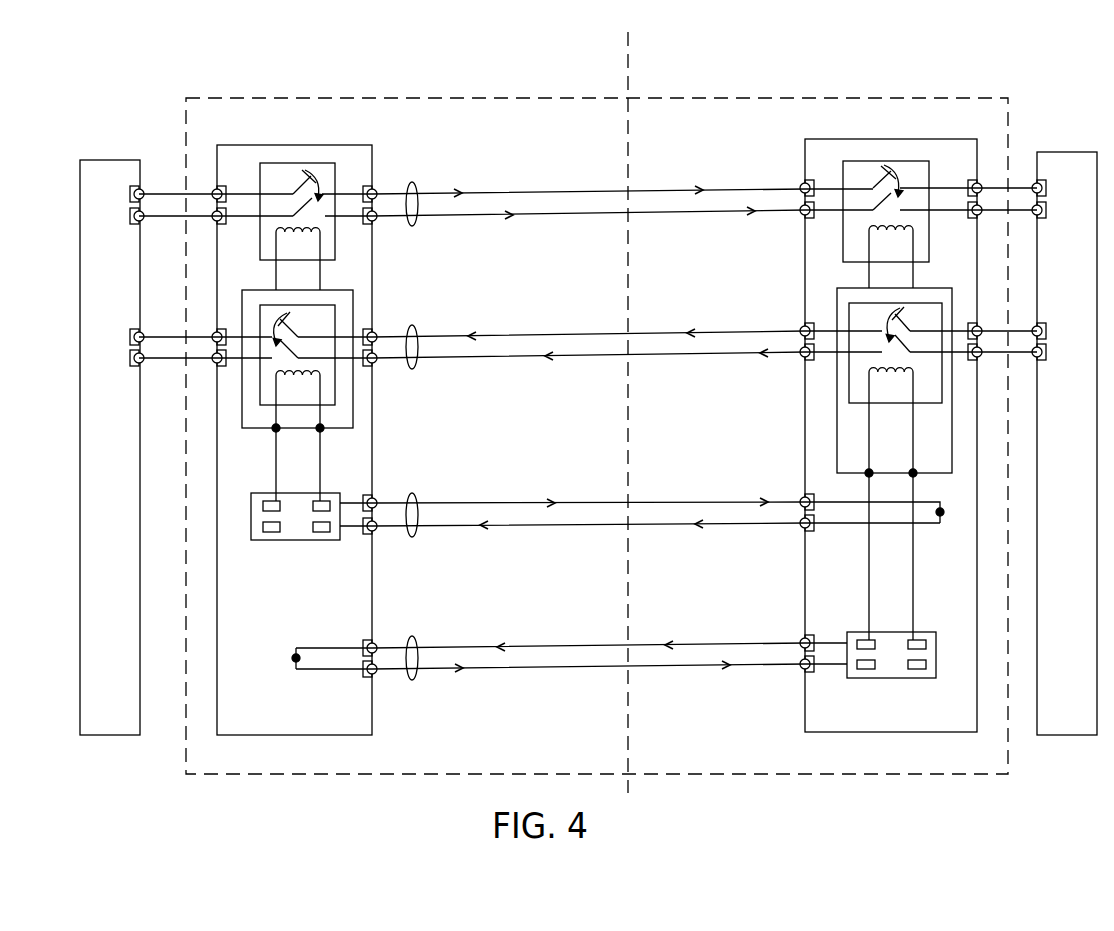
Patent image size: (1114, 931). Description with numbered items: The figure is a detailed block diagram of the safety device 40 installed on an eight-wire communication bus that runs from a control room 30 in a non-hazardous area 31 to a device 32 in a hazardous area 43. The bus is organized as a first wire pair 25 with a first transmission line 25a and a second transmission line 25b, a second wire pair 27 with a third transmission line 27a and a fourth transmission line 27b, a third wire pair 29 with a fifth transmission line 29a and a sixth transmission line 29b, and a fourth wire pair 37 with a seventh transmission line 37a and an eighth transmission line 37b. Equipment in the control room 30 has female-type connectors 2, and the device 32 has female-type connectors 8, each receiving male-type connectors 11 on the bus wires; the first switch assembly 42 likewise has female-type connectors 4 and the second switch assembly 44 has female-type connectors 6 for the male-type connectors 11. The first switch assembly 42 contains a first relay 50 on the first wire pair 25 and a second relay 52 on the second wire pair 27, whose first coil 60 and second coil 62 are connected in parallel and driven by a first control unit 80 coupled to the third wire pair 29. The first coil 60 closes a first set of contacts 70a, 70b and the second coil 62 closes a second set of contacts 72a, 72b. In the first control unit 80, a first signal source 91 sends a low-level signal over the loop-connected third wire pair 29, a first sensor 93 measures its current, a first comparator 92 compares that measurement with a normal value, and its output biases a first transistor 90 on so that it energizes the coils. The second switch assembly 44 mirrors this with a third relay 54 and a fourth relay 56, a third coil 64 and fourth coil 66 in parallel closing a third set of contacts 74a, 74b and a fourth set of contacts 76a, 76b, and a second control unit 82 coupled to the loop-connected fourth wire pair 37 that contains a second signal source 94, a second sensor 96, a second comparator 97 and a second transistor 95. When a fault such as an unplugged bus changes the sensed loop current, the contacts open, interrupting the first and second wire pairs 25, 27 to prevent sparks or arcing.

The female-type connectors 2 is at (131, 188).
The female-type connectors 4 is at (226, 188).
The female-type connectors 6 is at (814, 184).
The female-type connectors 8 is at (1046, 184).
The male-type connectors 11 is at (145, 192).
The first wire pair 25 is at (414, 183).
The first transmission line 25a is at (502, 190).
The second transmission line 25b is at (700, 213).
The second wire pair 27 is at (413, 326).
The third transmission line 27a is at (552, 333).
The fourth transmission line 27b is at (655, 357).
The third wire pair 29 is at (413, 495).
The fifth transmission line 29a is at (680, 501).
The sixth transmission line 29b is at (540, 526).
The control room 30 is at (138, 160).
The non-hazardous area 31 is at (193, 66).
The device 32 is at (1045, 152).
The fourth wire pair 37 is at (414, 636).
The seventh transmission line 37a is at (680, 646).
The eighth transmission line 37b is at (543, 670).
The safety device 40 is at (648, 98).
The first switch assembly 42 is at (325, 145).
The hazardous area 43 is at (978, 62).
The second switch assembly 44 is at (903, 139).
The first relay 50 is at (336, 250).
The second relay 52 is at (337, 390).
The third relay 54 is at (930, 250).
The fourth relay 56 is at (861, 404).
The first coil 60 is at (277, 238).
The second coil 62 is at (277, 378).
The third coil 64 is at (869, 236).
The fourth coil 66 is at (869, 377).
The first set of contacts 70a is at (296, 182).
The first set of contacts 70b is at (296, 204).
The second set of contacts 72a is at (300, 328).
The second set of contacts 72b is at (300, 350).
The third set of contacts 74a is at (880, 177).
The third set of contacts 74b is at (880, 198).
The fourth set of contacts 76a is at (908, 323).
The fourth set of contacts 76b is at (908, 345).
The first control unit 80 is at (290, 541).
The second control unit 82 is at (888, 679).
The first transistor 90 is at (271, 500).
The first signal source 91 is at (321, 500).
The first comparator 92 is at (271, 533).
The first sensor 93 is at (325, 533).
The second signal source 94 is at (864, 639).
The second transistor 95 is at (918, 639).
The second sensor 96 is at (864, 671).
The second comparator 97 is at (920, 671).